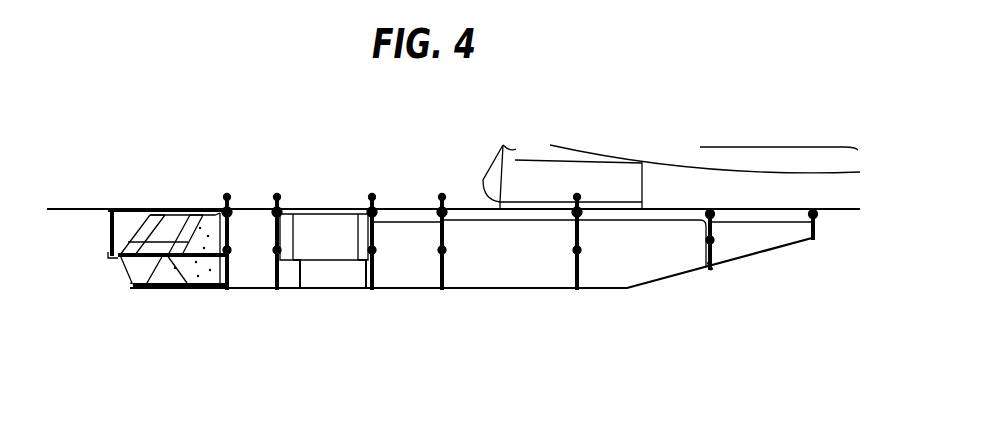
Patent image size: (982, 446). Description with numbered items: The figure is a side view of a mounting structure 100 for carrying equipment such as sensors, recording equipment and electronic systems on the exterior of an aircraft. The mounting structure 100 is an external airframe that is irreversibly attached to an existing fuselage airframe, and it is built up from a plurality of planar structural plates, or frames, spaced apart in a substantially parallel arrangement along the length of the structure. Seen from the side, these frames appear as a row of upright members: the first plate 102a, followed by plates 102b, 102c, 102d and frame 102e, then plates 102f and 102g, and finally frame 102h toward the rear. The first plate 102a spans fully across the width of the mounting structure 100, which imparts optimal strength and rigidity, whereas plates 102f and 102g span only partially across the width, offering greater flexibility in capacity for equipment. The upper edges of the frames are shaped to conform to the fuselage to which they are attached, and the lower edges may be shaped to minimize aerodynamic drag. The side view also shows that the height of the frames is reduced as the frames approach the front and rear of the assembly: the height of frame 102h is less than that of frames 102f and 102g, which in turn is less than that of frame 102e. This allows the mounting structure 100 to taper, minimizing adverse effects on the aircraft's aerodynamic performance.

The mounting structure 100 is at (265, 158).
The first plate 102a is at (228, 266).
The plate 102b is at (279, 270).
The plate 102c is at (374, 266).
The plate 102d is at (444, 268).
The frame 102e is at (579, 268).
The plate 102f is at (712, 252).
The plate 102g is at (710, 253).
The frame 102h is at (815, 226).